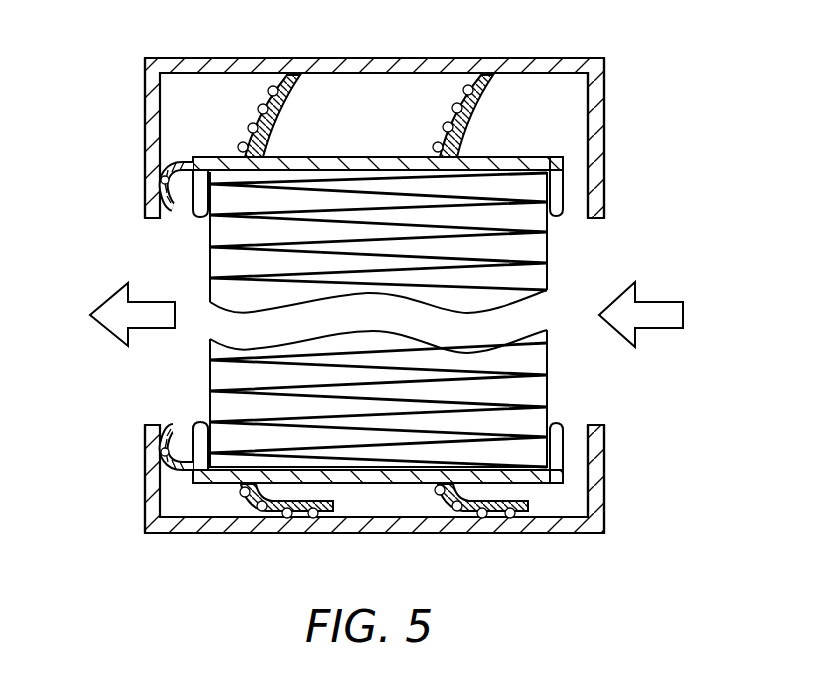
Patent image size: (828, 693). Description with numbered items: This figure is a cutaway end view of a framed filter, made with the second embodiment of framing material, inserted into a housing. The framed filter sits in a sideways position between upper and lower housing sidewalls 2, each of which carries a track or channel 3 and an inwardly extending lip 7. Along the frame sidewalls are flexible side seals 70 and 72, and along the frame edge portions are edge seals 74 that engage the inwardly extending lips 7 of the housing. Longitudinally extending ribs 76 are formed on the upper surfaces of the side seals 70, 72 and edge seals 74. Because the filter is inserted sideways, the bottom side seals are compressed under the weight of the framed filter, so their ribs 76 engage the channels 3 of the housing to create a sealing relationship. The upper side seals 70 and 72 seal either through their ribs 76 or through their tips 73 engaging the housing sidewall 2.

The filter housing sidewall 2 is at (363, 58).
The track 3 is at (586, 73).
The inwardly extending lip 7 is at (606, 136).
The side seal 70 is at (282, 100).
The side seal 72 is at (470, 108).
The tip 73 is at (292, 72).
The edge seal 74 is at (188, 165).
The longitudinally extending rib 76 is at (262, 103).